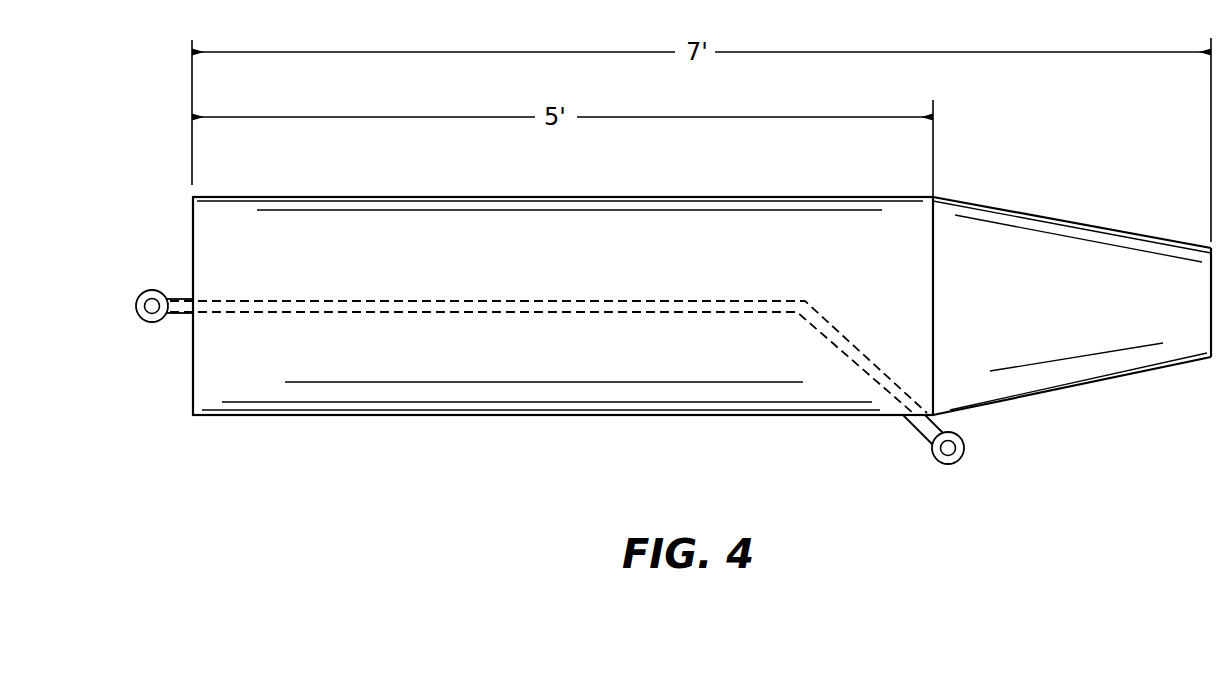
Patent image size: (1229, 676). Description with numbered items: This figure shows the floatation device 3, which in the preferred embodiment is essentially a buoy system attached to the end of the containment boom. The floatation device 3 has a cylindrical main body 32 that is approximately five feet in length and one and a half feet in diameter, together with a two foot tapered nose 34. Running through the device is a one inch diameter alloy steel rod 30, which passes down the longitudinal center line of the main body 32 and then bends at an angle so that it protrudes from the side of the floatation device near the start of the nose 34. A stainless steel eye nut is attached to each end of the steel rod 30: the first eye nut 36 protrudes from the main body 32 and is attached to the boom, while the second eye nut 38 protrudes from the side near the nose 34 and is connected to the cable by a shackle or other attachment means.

The floatation device 3 is at (306, 466).
The steel rod 30 is at (572, 312).
The cylindrical main body 32 is at (611, 390).
The tapered nose 34 is at (1103, 358).
The first eye nut 36 is at (150, 290).
The second eye nut 38 is at (951, 464).